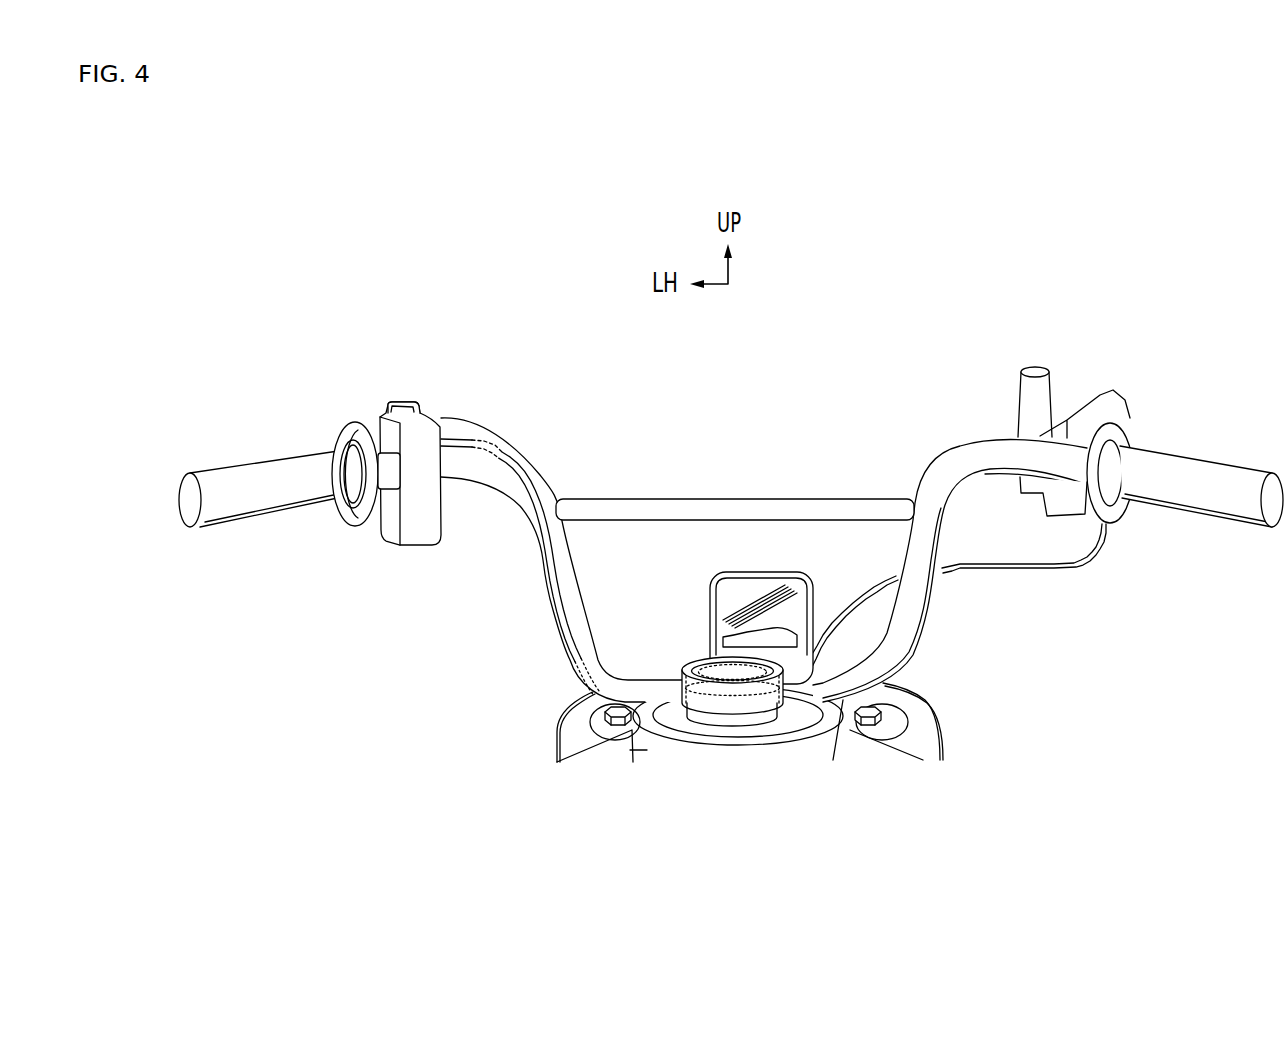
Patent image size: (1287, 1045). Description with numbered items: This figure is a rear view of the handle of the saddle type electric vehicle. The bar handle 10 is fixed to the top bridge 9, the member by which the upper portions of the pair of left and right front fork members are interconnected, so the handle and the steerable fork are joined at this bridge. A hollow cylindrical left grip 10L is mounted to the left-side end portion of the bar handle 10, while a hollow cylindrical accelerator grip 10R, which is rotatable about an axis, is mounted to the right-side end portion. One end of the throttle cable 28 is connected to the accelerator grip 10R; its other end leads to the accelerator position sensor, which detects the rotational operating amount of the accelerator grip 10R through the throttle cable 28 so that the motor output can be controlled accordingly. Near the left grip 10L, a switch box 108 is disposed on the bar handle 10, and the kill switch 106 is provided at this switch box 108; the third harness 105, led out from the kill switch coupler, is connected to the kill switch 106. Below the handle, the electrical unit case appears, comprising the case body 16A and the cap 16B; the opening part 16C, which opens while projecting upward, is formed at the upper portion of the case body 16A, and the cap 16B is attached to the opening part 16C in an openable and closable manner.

The top bridge 9 is at (920, 718).
The bar handle 10 is at (950, 445).
The left grip 10L is at (248, 472).
The accelerator grip 10R is at (1205, 463).
The case body 16A is at (632, 730).
The cap 16B is at (707, 676).
The opening part 16C is at (740, 672).
The throttle cable 28 is at (1050, 570).
The third harness 105 is at (560, 592).
The kill switch 106 is at (403, 402).
The switch box 108 is at (427, 432).